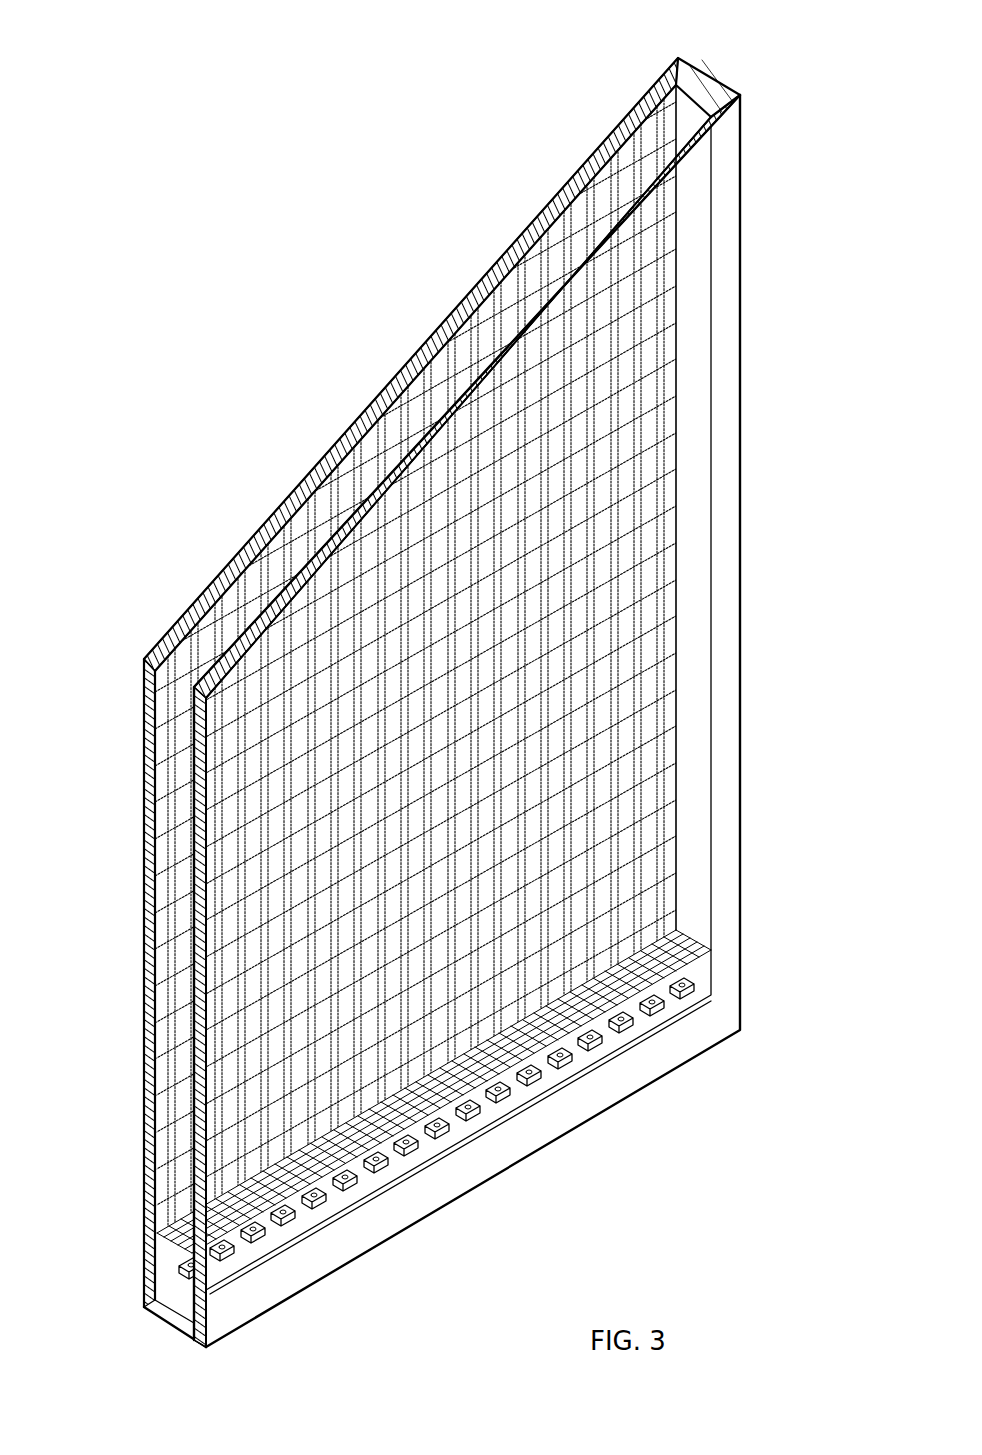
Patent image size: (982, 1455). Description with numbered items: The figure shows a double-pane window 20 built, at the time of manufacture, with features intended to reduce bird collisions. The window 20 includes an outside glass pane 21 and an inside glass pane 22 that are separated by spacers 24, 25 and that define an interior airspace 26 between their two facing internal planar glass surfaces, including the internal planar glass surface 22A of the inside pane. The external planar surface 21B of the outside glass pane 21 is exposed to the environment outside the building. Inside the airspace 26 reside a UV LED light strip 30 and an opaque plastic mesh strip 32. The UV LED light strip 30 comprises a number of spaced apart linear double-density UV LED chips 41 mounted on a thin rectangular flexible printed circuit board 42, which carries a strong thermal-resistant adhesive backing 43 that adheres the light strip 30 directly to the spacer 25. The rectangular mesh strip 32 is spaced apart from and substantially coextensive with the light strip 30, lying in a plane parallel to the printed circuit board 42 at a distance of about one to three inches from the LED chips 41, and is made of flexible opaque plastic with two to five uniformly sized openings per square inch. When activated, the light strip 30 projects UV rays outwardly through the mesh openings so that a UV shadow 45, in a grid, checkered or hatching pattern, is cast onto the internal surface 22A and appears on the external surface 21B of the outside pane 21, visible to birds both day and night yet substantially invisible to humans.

The double-pane window 20 is at (214, 308).
The outside glass pane 21 is at (365, 505).
The external planar surface 21B is at (237, 725).
The inside glass pane 22 is at (196, 604).
The internal planar glass surface 22A is at (165, 690).
The spacer 24 is at (706, 84).
The spacer 25 is at (182, 1308).
The interior airspace 26 is at (455, 348).
The UV LED light strip 30 is at (190, 1265).
The plastic mesh strip 32 is at (190, 1218).
The UV LED chips 41 is at (386, 1168).
The flexible printed circuit board 42 is at (280, 1232).
The thermal-resistant adhesive backing 43 is at (185, 1280).
The UV shadow 45 is at (458, 654).